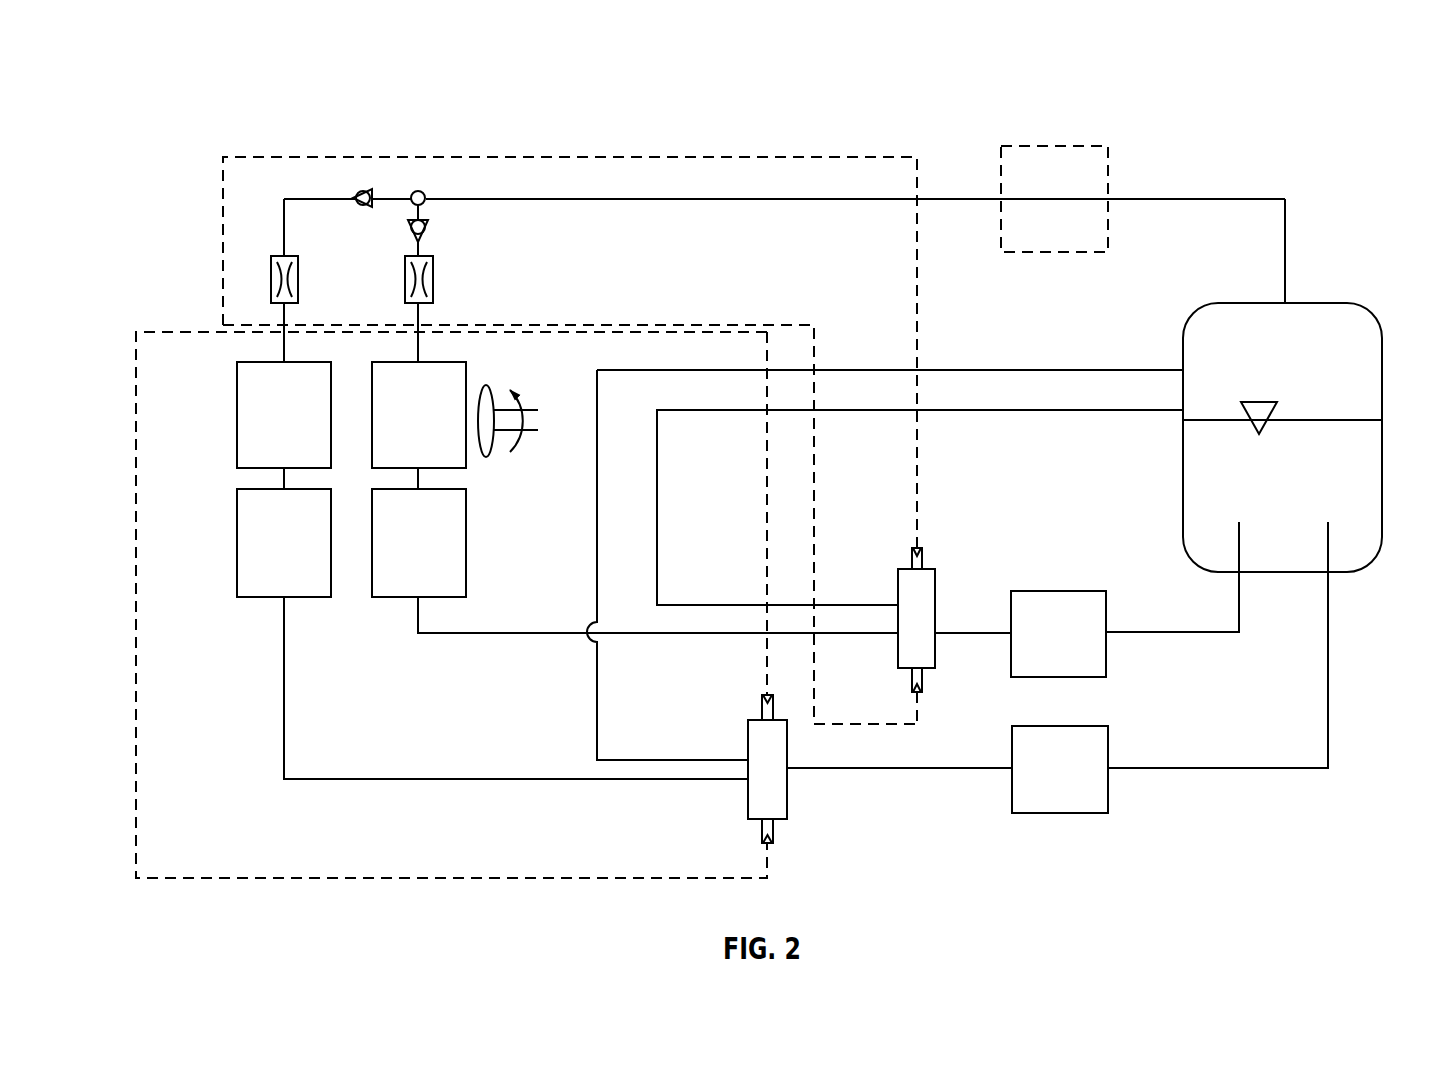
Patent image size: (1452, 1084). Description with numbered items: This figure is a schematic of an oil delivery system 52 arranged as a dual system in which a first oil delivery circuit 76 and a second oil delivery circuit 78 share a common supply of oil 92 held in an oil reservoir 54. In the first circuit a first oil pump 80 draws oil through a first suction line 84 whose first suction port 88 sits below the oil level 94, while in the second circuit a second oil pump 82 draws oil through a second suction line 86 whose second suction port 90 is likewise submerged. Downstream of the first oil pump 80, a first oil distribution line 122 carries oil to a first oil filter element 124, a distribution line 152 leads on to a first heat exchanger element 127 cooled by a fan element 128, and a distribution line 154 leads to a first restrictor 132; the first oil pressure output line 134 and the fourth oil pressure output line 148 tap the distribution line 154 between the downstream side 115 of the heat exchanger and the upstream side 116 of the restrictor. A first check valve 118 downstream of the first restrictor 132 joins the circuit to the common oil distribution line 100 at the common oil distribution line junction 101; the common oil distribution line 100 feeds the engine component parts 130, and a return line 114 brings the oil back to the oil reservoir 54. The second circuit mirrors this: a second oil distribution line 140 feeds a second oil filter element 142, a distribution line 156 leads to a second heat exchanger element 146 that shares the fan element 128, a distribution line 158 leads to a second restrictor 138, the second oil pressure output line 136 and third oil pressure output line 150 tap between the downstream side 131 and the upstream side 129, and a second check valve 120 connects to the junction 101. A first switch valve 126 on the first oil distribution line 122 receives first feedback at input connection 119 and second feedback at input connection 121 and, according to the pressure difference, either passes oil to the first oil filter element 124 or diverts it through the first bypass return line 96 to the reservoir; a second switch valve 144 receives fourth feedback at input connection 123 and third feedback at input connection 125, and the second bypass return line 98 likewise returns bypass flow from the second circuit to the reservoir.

The oil delivery system 52 is at (1161, 106).
The oil reservoir 54 is at (1370, 311).
The first oil delivery circuit 76 is at (1086, 590).
The second oil delivery circuit 78 is at (1091, 816).
The first oil pump 80 is at (1072, 677).
The second oil pump 82 is at (1045, 814).
The first suction line 84 is at (1202, 632).
The second suction line 86 is at (1328, 698).
The first suction port 88 is at (1239, 518).
The second suction port 90 is at (1328, 518).
The oil 92 is at (1364, 447).
The oil level 94 is at (1317, 417).
The first bypass return line 96 is at (1090, 410).
The second bypass return line 98 is at (1085, 370).
The common oil distribution line 100 is at (770, 199).
The common oil distribution line junction 101 is at (418, 191).
The return line 114 is at (1215, 199).
The downstream side 115 is at (411, 357).
The upstream side 116 is at (410, 317).
The first check valve 118 is at (430, 228).
The input connection 119 is at (923, 688).
The second check valve 120 is at (370, 190).
The input connection 121 is at (909, 549).
The first oil distribution line 122 is at (640, 633).
The input connection 123 is at (759, 704).
The first oil filter element 124 is at (466, 555).
The input connection 125 is at (759, 833).
The first switch valve 126 is at (935, 585).
The first heat exchanger element 127 is at (390, 360).
The fan element 128 is at (529, 399).
The upstream side 129 is at (291, 317).
The engine component parts 130 is at (1058, 146).
The downstream side 131 is at (268, 358).
The first restrictor 132 is at (433, 272).
The first oil pressure output line 134 is at (631, 325).
The second oil pressure output line 136 is at (604, 157).
The second restrictor 138 is at (270, 283).
The second oil distribution line 140 is at (490, 779).
The second oil filter element 142 is at (237, 555).
The second switch valve 144 is at (787, 795).
The second heat exchanger element 146 is at (237, 412).
The fourth oil pressure output line 148 is at (766, 520).
The third oil pressure output line 150 is at (520, 878).
The distribution line 152 is at (420, 480).
The distribution line 154 is at (421, 351).
The distribution line 156 is at (283, 480).
The distribution line 158 is at (283, 337).